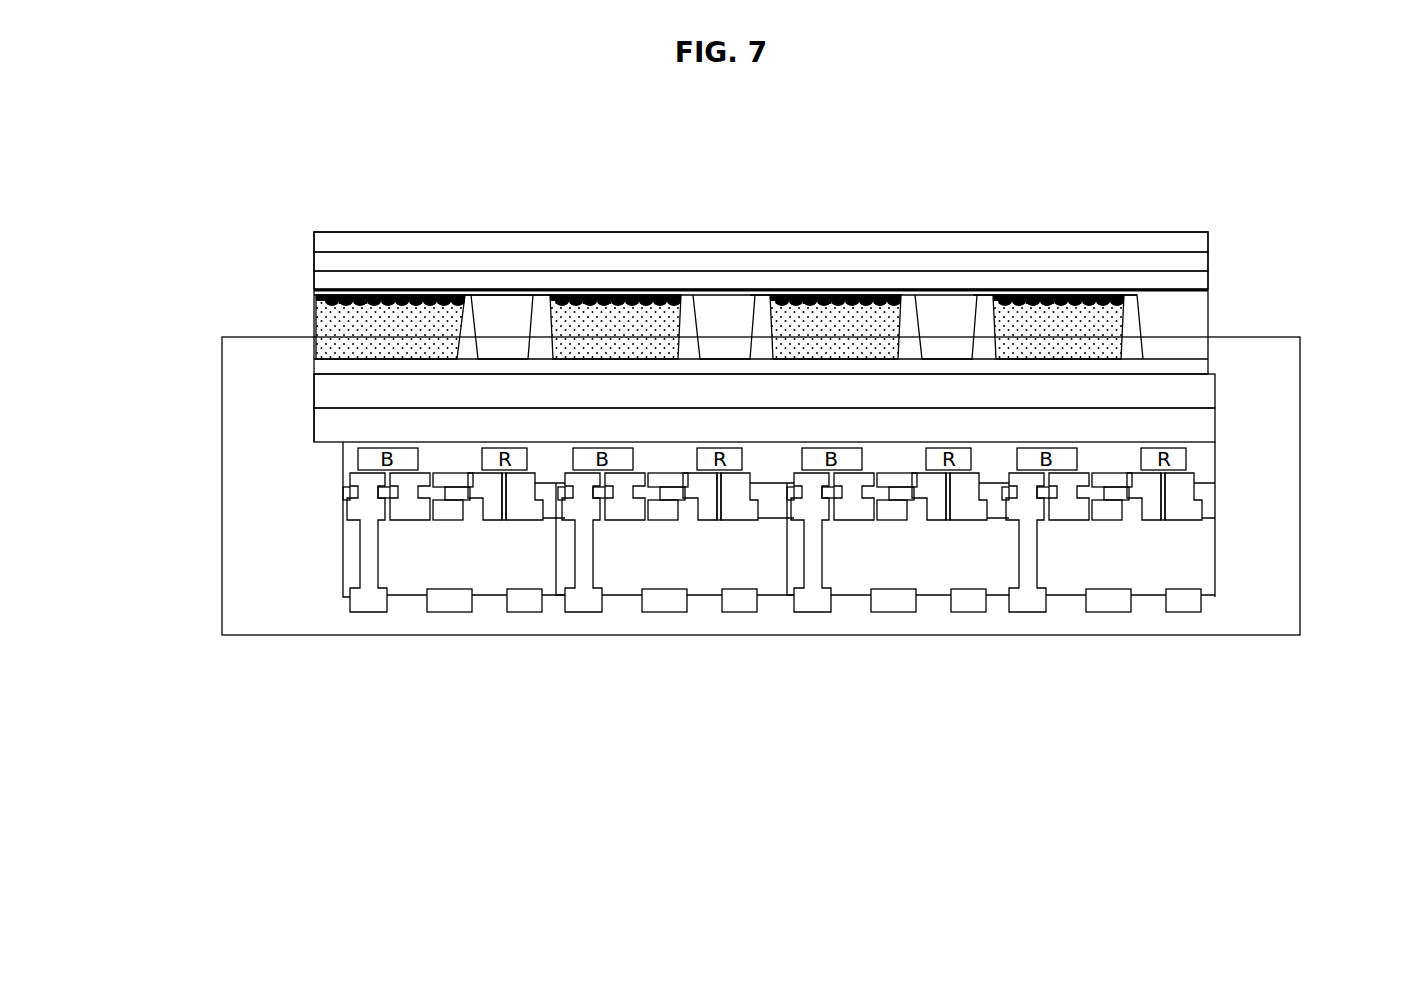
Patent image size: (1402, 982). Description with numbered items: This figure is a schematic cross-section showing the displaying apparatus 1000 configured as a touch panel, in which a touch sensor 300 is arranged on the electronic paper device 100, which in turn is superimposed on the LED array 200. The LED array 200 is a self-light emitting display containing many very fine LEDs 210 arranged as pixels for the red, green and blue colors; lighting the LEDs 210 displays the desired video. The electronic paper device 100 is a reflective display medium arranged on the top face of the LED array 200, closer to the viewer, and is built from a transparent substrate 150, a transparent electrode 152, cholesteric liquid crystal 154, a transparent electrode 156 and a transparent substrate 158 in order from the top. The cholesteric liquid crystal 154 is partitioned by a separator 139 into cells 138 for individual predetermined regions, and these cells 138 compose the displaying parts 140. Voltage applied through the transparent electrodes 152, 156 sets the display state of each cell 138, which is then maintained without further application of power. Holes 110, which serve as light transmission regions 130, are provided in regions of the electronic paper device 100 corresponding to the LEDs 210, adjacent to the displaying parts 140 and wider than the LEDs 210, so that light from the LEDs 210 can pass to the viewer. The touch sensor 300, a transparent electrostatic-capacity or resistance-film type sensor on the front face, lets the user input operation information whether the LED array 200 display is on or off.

The displaying apparatus 1000 is at (115, 645).
The electronic paper device 100 is at (305, 442).
The LED array 200 is at (305, 442).
The LED 210 is at (405, 462).
The touch sensor 300 is at (1208, 247).
The transparent substrate 150 is at (1208, 268).
The transparent electrode 152 is at (1208, 287).
The separator 139 is at (1133, 357).
The displaying part 140 is at (360, 280).
The cell 138 is at (440, 302).
The cholesteric liquid crystal 154 is at (383, 327).
The hole 110 is at (483, 322).
The light transmission region 130 is at (527, 292).
The transparent electrode 156 is at (1200, 397).
The transparent substrate 158 is at (1200, 430).